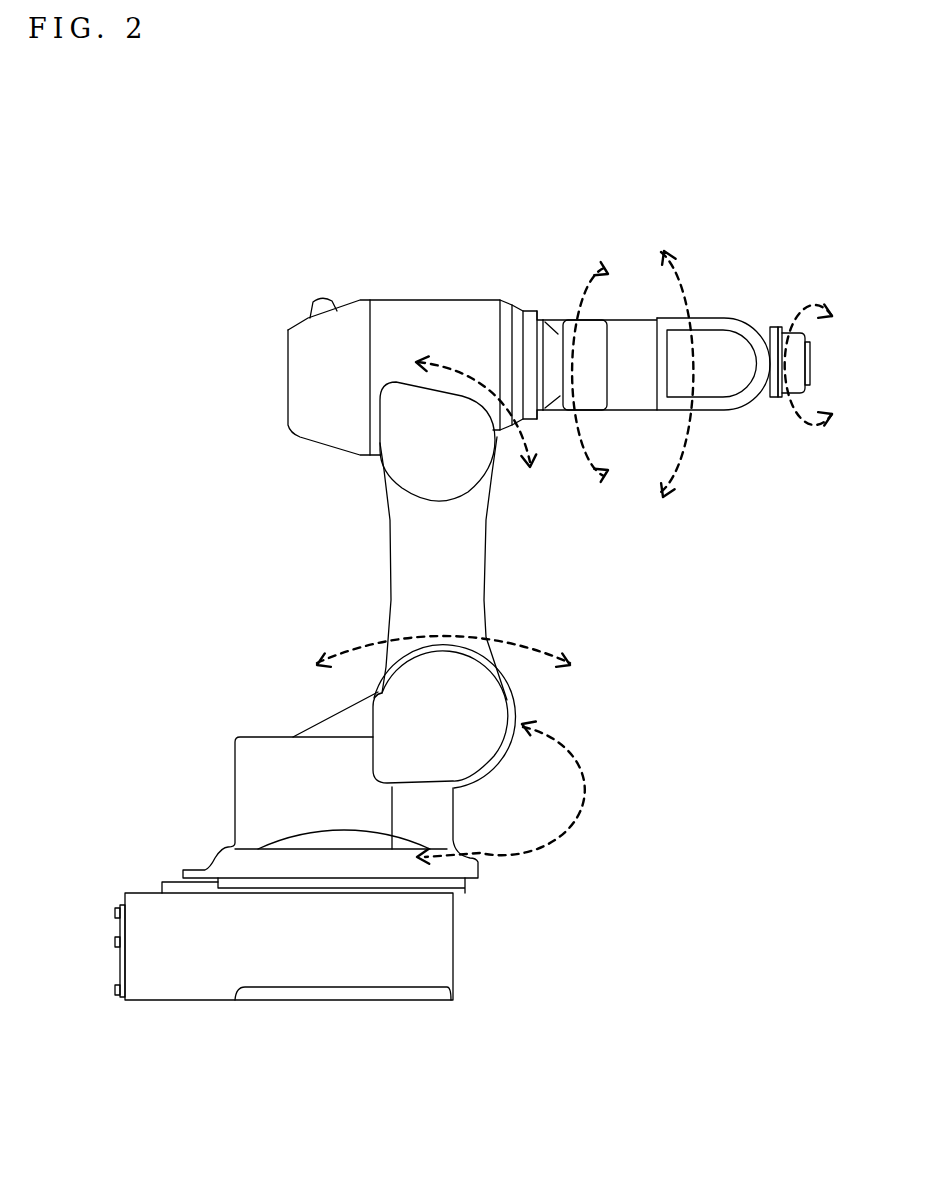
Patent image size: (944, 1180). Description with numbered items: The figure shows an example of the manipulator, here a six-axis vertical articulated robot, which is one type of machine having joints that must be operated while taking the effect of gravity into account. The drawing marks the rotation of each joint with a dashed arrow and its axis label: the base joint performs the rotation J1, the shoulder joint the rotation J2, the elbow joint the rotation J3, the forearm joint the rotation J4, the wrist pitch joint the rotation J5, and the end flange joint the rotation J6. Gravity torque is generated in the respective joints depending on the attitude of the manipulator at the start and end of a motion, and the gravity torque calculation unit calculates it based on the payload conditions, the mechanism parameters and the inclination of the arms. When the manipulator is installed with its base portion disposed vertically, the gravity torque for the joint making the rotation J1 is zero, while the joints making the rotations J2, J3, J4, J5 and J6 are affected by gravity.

The J1 joint rotation axis J1 is at (520, 793).
The J2 joint rotation axis J2 is at (443, 637).
The J3 joint rotation axis J3 is at (476, 429).
The J4 joint rotation axis J4 is at (568, 370).
The J5 joint rotation axis J5 is at (686, 374).
The J6 joint rotation axis J6 is at (797, 354).